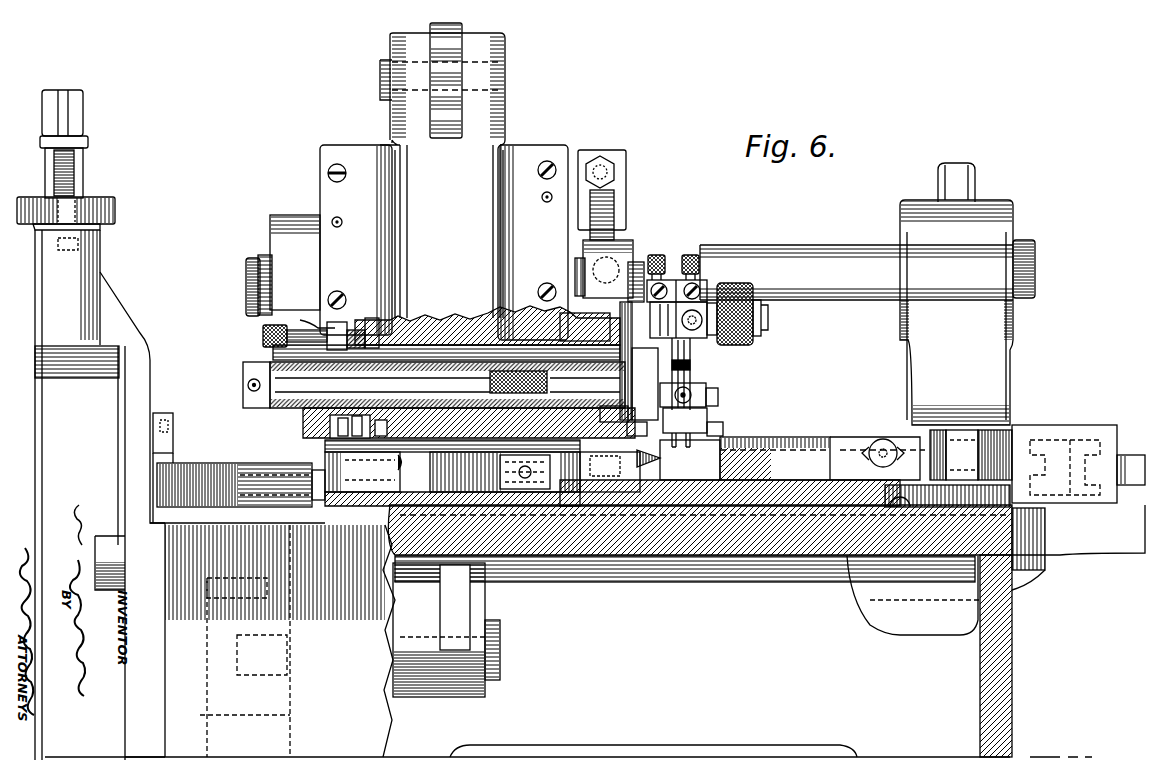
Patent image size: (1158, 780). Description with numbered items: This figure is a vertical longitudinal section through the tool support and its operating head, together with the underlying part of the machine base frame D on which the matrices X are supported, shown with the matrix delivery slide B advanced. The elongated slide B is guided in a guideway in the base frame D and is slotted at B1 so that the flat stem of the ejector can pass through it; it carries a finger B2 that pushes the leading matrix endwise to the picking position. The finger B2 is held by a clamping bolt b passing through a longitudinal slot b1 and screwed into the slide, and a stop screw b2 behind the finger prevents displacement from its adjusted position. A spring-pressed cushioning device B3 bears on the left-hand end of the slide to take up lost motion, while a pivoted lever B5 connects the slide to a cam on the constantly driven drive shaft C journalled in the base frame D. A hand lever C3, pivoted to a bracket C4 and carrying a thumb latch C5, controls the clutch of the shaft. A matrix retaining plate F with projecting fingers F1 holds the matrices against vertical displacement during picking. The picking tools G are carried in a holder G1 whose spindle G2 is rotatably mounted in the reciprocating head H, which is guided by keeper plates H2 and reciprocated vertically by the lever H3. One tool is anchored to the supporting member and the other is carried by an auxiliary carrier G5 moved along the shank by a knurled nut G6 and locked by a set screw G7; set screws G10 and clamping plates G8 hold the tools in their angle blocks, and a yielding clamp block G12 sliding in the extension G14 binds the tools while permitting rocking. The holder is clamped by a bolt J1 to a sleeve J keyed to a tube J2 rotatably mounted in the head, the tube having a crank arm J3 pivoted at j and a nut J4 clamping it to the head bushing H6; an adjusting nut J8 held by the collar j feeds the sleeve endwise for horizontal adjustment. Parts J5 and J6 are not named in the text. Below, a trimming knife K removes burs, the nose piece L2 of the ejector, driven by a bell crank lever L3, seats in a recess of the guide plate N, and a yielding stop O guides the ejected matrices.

The thumb latch C5 is at (62, 130).
The hand lever C3 is at (102, 207).
The bracket C4 is at (146, 370).
The drive shaft C is at (246, 281).
The lever H3 is at (455, 42).
The reciprocating head H is at (416, 318).
The keeper plates H2 is at (336, 153).
The head bushing H6 is at (438, 318).
The bracket block J6 is at (622, 208).
The bearing block J5 is at (612, 252).
The pivot / collar j is at (636, 266).
The nut J4 is at (352, 322).
The tube J2 is at (458, 318).
The sleeve J is at (507, 330).
The crank arm J3 is at (575, 318).
The bolt J1 is at (276, 398).
The adjusting nut J8 is at (306, 430).
The set screws G10 is at (690, 255).
The clamping plates G8 is at (698, 282).
The auxiliary carrier G5 is at (706, 302).
The set screw G7 is at (735, 288).
The knurled nut G6 is at (762, 320).
The picking tools G is at (683, 378).
The tool holder G1 is at (639, 361).
The spindle G2 is at (610, 370).
The extension G14 is at (702, 387).
The yielding clamp block G12 is at (704, 403).
The matrix retaining plate F is at (700, 430).
The projecting fingers F1 is at (720, 433).
The trimming knife K is at (606, 433).
The matrices X is at (733, 460).
The finger B2 is at (865, 472).
The clamping bolt b is at (875, 440).
The longitudinal slot b1 is at (865, 455).
The stop screw b2 is at (940, 440).
The matrix delivery slide B is at (370, 492).
The pivoted lever B5 is at (1122, 458).
The cushioning device B3 is at (240, 464).
The slot B1 is at (385, 468).
The stop O is at (470, 455).
The nose piece L2 is at (492, 505).
The guide plate N is at (545, 505).
The base frame D is at (633, 555).
The bell crank lever L3 is at (470, 612).